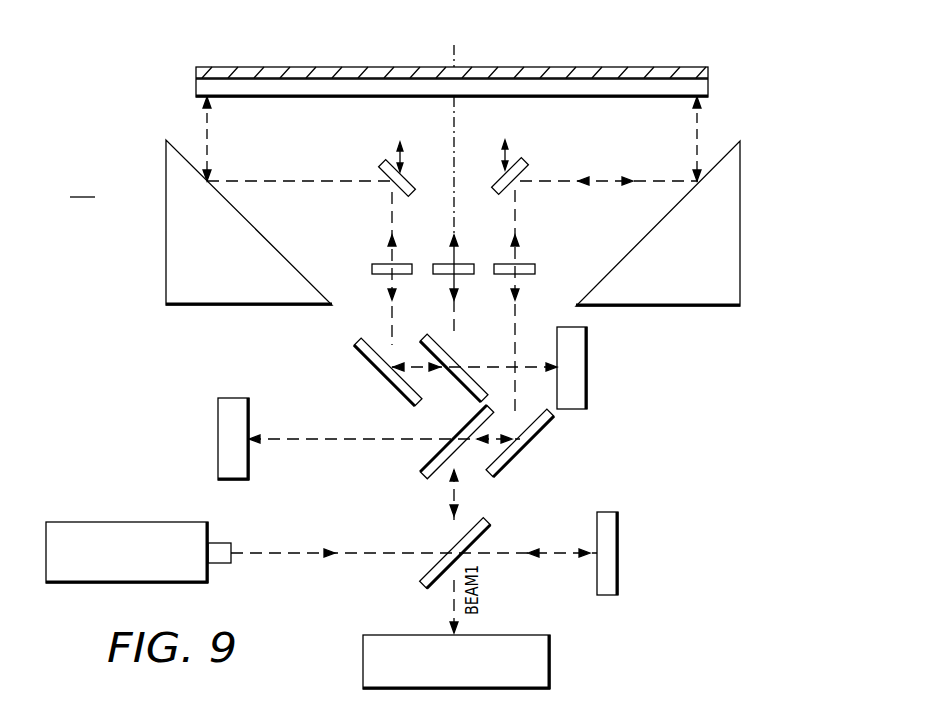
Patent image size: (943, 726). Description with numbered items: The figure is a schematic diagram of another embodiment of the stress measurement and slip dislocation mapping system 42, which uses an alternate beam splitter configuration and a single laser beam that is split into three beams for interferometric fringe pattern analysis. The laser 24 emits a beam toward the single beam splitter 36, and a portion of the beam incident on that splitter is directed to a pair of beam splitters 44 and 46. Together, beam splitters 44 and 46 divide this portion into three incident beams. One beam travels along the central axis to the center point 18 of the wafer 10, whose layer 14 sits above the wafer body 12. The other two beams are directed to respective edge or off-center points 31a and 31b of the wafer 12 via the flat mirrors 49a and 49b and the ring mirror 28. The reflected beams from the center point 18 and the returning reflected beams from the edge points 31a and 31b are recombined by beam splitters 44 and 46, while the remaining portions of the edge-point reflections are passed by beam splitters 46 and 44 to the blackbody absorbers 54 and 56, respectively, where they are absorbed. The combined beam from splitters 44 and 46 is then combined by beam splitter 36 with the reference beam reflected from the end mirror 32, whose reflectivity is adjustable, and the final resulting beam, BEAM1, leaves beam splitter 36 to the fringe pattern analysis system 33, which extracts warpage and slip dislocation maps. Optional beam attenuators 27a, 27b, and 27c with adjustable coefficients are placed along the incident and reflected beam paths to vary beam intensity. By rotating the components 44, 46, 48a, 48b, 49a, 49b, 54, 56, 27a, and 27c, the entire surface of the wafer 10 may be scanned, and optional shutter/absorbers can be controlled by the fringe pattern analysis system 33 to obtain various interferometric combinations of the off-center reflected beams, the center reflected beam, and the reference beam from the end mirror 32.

The wafer 10 is at (188, 78).
The thin film layer 14 is at (249, 66).
The wafer 12 is at (268, 97).
The center point 18 is at (455, 100).
The edge point 31a is at (204, 100).
The edge point 31b is at (700, 100).
The ring mirror 28 is at (165, 264).
The stress measurement and slip dislocation mapping system 42 is at (82, 185).
The flat mirror 49a is at (385, 165).
The flat mirror 49b is at (525, 165).
The beam attenuator 27a is at (380, 262).
The beam attenuator 27b is at (460, 276).
The beam attenuator 27c is at (526, 262).
The beam splitter 46 is at (432, 334).
The rotatable component 48a is at (394, 392).
The rotatable component 48b is at (524, 464).
The beam splitter 44 is at (428, 456).
The blackbody absorber 54 is at (588, 352).
The blackbody absorber 56 is at (250, 464).
The laser 24 is at (210, 580).
The single beam splitter 36 is at (426, 570).
The end mirror 32 is at (604, 596).
The fringe pattern analysis system 33 is at (552, 670).